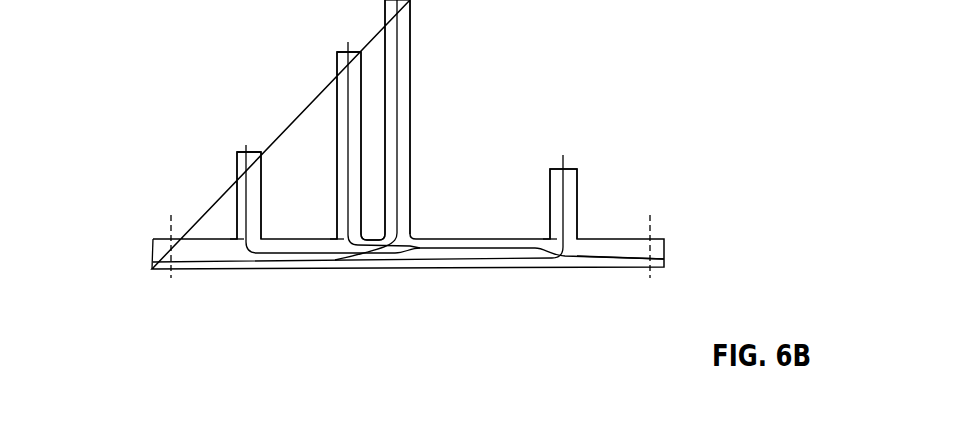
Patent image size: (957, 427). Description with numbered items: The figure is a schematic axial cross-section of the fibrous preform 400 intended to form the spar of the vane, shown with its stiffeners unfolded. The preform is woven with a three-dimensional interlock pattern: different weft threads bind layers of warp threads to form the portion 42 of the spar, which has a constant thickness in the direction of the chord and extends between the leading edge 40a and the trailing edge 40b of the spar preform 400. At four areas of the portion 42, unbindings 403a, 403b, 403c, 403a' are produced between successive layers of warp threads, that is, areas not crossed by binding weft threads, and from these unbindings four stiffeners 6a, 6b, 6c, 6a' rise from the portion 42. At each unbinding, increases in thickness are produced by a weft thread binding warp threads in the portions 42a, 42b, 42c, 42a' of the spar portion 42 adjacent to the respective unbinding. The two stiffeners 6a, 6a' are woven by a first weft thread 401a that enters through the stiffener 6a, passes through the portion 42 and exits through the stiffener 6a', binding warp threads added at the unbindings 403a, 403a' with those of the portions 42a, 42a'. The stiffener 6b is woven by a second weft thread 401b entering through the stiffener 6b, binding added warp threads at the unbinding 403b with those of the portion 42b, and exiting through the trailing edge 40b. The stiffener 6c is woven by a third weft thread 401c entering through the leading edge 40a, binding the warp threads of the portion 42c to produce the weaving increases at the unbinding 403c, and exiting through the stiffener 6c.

The stiffener 6a is at (216, 195).
The stiffener 6b is at (337, 90).
The stiffener 6c is at (409, 30).
The stiffener 6a' is at (597, 203).
The leading edge 40a is at (152, 262).
The trailing edge 40b is at (665, 247).
The portion of the spar 42 is at (608, 250).
The portion of the spar portion 42a is at (322, 234).
The portion of the spar portion 42b is at (341, 232).
The portion of the spar portion 42c is at (412, 240).
The portion of the spar portion 42a' is at (360, 236).
The fibrous preform 400 is at (648, 271).
The first weft thread 401a is at (237, 152).
The second weft thread 401b is at (337, 62).
The third weft thread 401c is at (394, 97).
The unbinding 403a is at (172, 201).
The unbinding 403b is at (332, 234).
The unbinding 403c is at (376, 231).
The unbinding 403a' is at (511, 199).